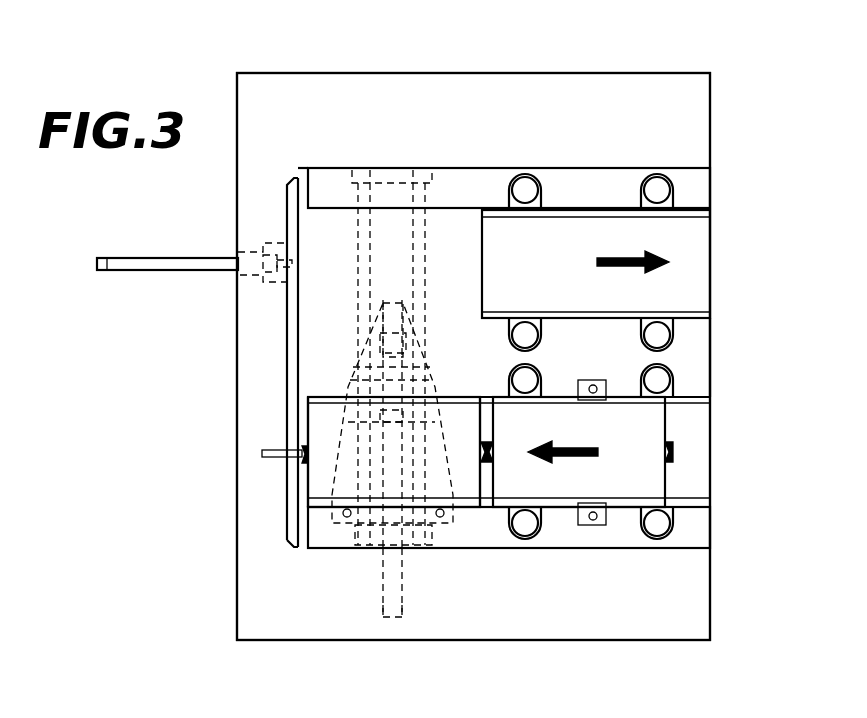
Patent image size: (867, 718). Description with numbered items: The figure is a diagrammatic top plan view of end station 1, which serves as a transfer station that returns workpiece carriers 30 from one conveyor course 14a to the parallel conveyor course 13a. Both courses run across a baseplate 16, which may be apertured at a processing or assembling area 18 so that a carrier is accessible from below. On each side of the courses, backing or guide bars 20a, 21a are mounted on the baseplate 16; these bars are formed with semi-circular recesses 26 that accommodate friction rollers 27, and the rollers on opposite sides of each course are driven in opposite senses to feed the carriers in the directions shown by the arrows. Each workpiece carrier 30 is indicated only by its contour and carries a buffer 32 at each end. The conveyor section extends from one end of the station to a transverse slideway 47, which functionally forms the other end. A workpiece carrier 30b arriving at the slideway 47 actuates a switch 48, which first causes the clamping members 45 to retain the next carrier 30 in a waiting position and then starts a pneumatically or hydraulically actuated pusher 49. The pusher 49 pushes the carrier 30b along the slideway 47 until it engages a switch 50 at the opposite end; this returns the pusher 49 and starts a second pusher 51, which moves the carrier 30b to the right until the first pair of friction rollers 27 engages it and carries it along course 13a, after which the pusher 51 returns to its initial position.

The end station 1 is at (646, 64).
The conveyor course 13a is at (712, 275).
The conveyor course 14a is at (715, 479).
The baseplate 16 is at (470, 598).
The processing or assembling area 18 is at (622, 533).
The backing or guide bar 20a is at (693, 190).
The backing or guide bar 21a is at (688, 357).
The semi-circular aperture or recess 26 is at (524, 186).
The friction roller 27 is at (516, 178).
The workpiece carrier 30 is at (568, 480).
The workpiece carrier 30b is at (327, 477).
The buffer 32 is at (673, 450).
The clamping member 45 is at (586, 525).
The transverse slideway 47 is at (332, 315).
The switch 48 is at (266, 449).
The pusher 49 is at (390, 587).
The switch 50 is at (390, 170).
The pusher 51 is at (152, 262).